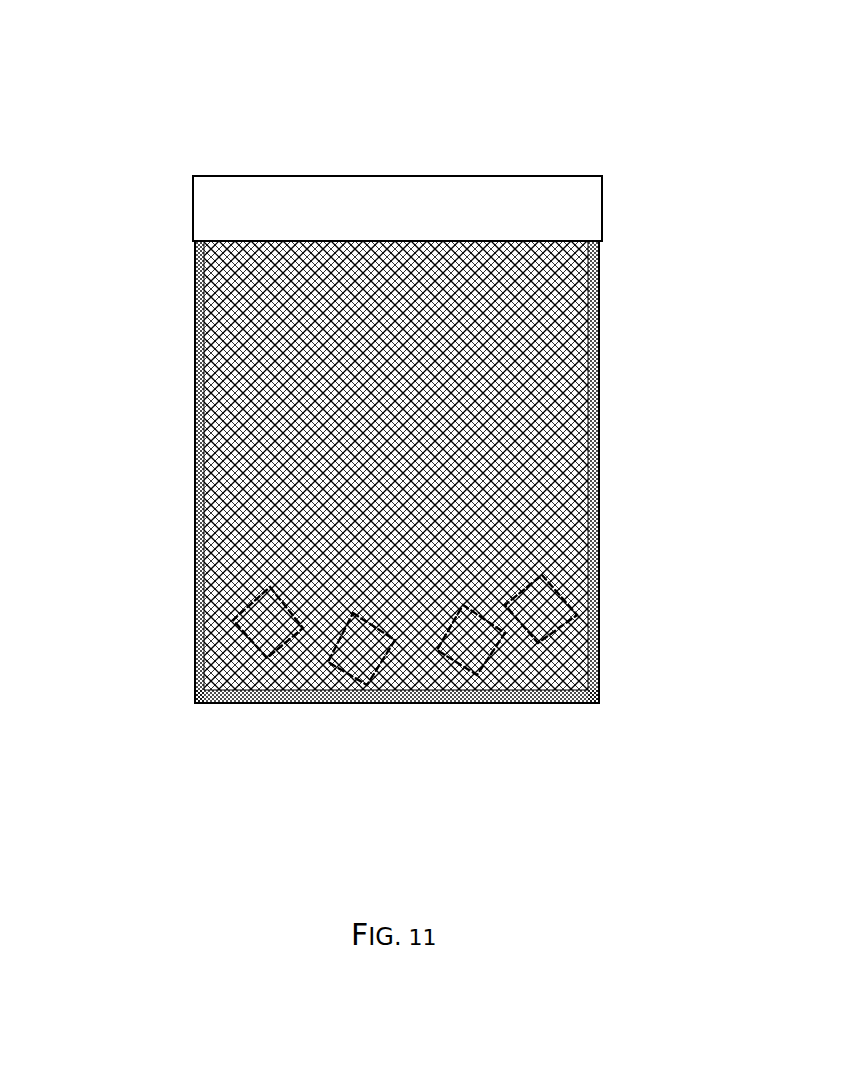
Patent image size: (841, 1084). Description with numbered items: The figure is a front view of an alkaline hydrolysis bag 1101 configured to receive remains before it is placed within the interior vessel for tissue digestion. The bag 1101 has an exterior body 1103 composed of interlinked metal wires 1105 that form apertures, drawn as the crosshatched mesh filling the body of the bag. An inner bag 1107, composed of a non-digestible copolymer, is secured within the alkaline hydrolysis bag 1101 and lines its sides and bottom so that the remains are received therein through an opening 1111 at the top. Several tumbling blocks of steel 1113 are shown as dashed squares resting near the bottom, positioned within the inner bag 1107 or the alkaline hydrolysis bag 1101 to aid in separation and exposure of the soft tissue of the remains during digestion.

The alkaline hydrolysis bag 1101 is at (171, 91).
The opening 1111 is at (448, 122).
The interlinked metal wires 1105 is at (231, 409).
The inner bag 1107 is at (587, 442).
The exterior body 1103 is at (599, 580).
The tumbling blocks of steel 1113 is at (556, 632).